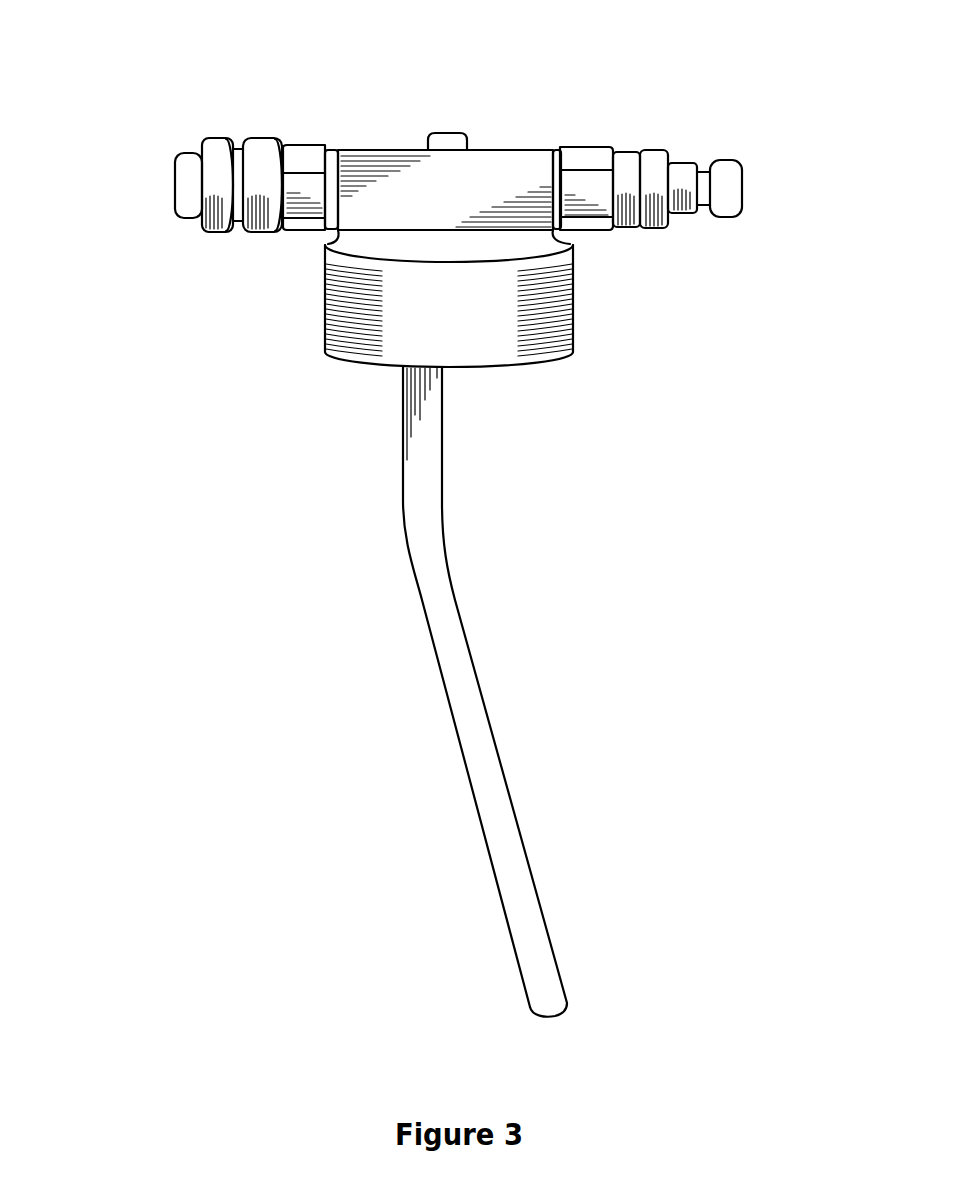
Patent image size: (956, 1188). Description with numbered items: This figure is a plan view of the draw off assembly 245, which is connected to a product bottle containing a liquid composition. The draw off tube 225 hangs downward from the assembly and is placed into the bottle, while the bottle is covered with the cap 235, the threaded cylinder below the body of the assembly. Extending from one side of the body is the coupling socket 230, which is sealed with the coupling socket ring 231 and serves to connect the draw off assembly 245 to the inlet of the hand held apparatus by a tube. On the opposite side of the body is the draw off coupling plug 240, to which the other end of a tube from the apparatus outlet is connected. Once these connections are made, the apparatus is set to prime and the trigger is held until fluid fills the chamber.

The draw off tube 225 is at (470, 740).
The coupling socket 230 is at (172, 192).
The coupling socket ring 231 is at (244, 150).
The cap 235 is at (567, 327).
The draw off coupling plug 240 is at (732, 197).
The draw off assembly 245 is at (492, 150).